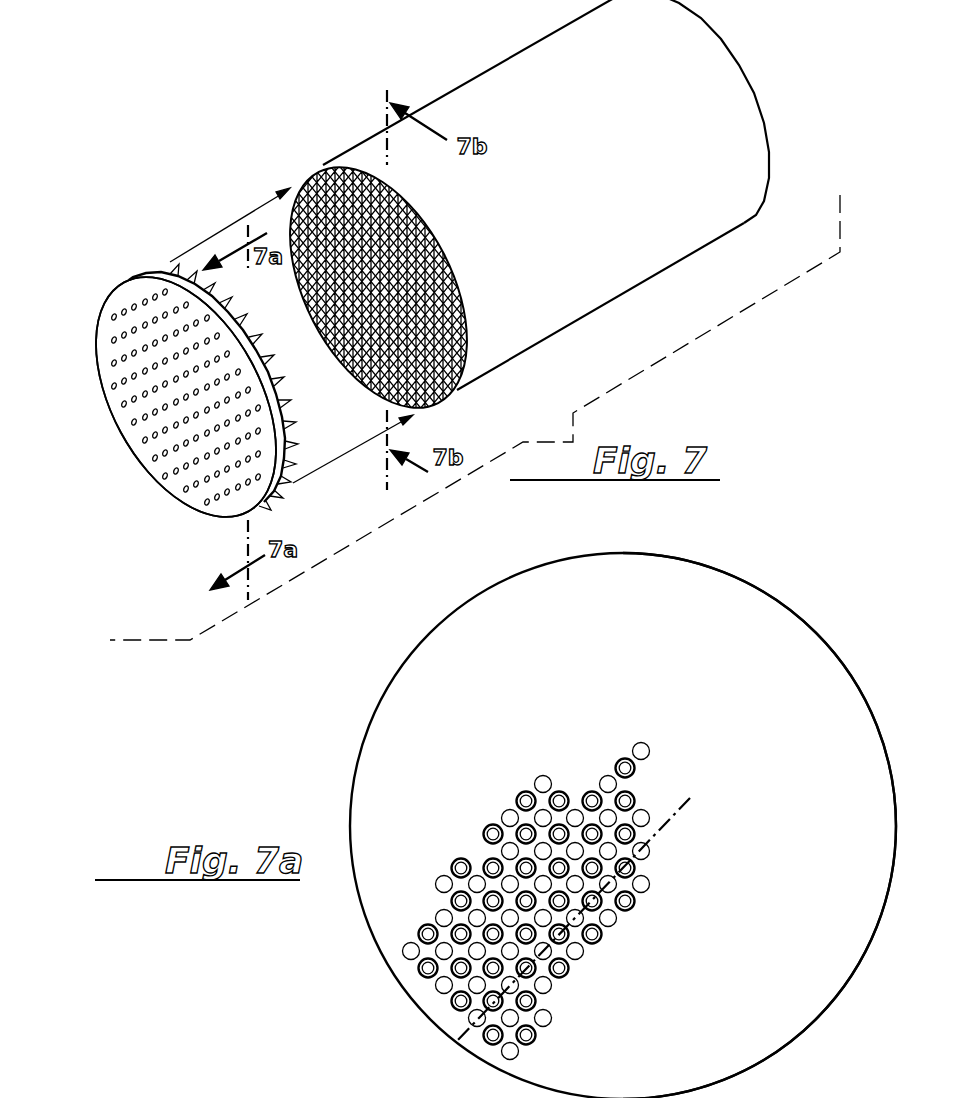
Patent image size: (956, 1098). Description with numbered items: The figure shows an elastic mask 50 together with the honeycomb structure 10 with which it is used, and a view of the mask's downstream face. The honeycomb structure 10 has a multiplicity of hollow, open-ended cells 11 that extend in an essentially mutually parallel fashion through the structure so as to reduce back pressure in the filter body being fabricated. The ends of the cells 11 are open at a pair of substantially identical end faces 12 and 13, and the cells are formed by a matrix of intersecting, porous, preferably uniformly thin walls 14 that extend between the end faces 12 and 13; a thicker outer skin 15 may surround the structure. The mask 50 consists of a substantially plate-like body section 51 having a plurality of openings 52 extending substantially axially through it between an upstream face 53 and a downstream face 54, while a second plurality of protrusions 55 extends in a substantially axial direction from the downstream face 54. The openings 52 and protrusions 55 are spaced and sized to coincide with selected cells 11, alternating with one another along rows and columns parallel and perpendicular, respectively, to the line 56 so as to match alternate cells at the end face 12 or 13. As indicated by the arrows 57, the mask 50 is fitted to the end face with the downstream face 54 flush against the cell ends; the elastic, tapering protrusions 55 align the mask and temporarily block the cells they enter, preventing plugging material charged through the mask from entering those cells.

In FIG. 7, the honeycomb structure 10 is at (457, 71).
In FIG. 7, the cells 11 is at (447, 273).
In FIG. 7, the end face 12 is at (314, 177).
In FIG. 7, the end face 13 is at (754, 97).
In FIG. 7, the intersecting walls 14 is at (467, 332).
In FIG. 7, the outer skin 15 is at (655, 227).
In FIG. 7, the elastic mask 50 is at (104, 439).
In FIG. 7A, the elastic mask 50 is at (793, 589).
In FIG. 7, the plate-like body section 51 is at (272, 445).
In FIG. 7, the openings 52 is at (123, 365).
In FIG. 7A, the openings 52 is at (607, 780).
In FIG. 7, the upstream face 53 is at (166, 440).
In FIG. 7, the downstream face 54 is at (195, 282).
In FIG. 7A, the downstream face 54 is at (783, 705).
In FIG. 7, the protrusions 55 is at (284, 393).
In FIG. 7A, the protrusions 55 is at (527, 830).
In FIG. 7A, the line 56 is at (682, 812).
In FIG. 7, the arrows 57 is at (257, 212).